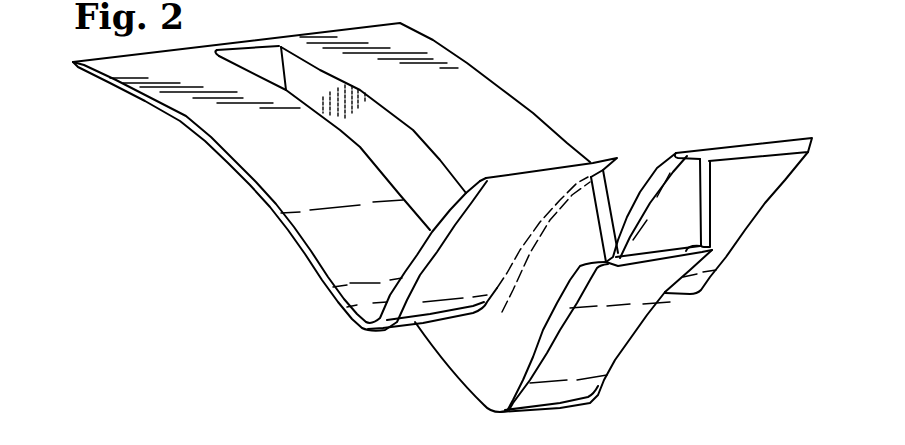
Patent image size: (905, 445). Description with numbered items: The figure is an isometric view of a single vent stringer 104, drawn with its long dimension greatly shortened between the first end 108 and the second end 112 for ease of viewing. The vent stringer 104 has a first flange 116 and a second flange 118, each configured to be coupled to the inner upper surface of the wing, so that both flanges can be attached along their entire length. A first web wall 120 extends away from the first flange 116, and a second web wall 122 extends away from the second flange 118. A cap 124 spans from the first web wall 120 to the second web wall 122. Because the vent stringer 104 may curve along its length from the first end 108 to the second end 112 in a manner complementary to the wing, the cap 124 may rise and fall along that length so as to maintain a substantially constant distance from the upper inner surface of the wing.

The vent stringer 104 is at (619, 82).
The first end 108 is at (688, 250).
The second end 112 is at (238, 42).
The first flange 116 is at (320, 176).
The second flange 118 is at (483, 116).
The first web wall 120 is at (507, 355).
The second web wall 122 is at (707, 188).
The cap 124 is at (603, 333).